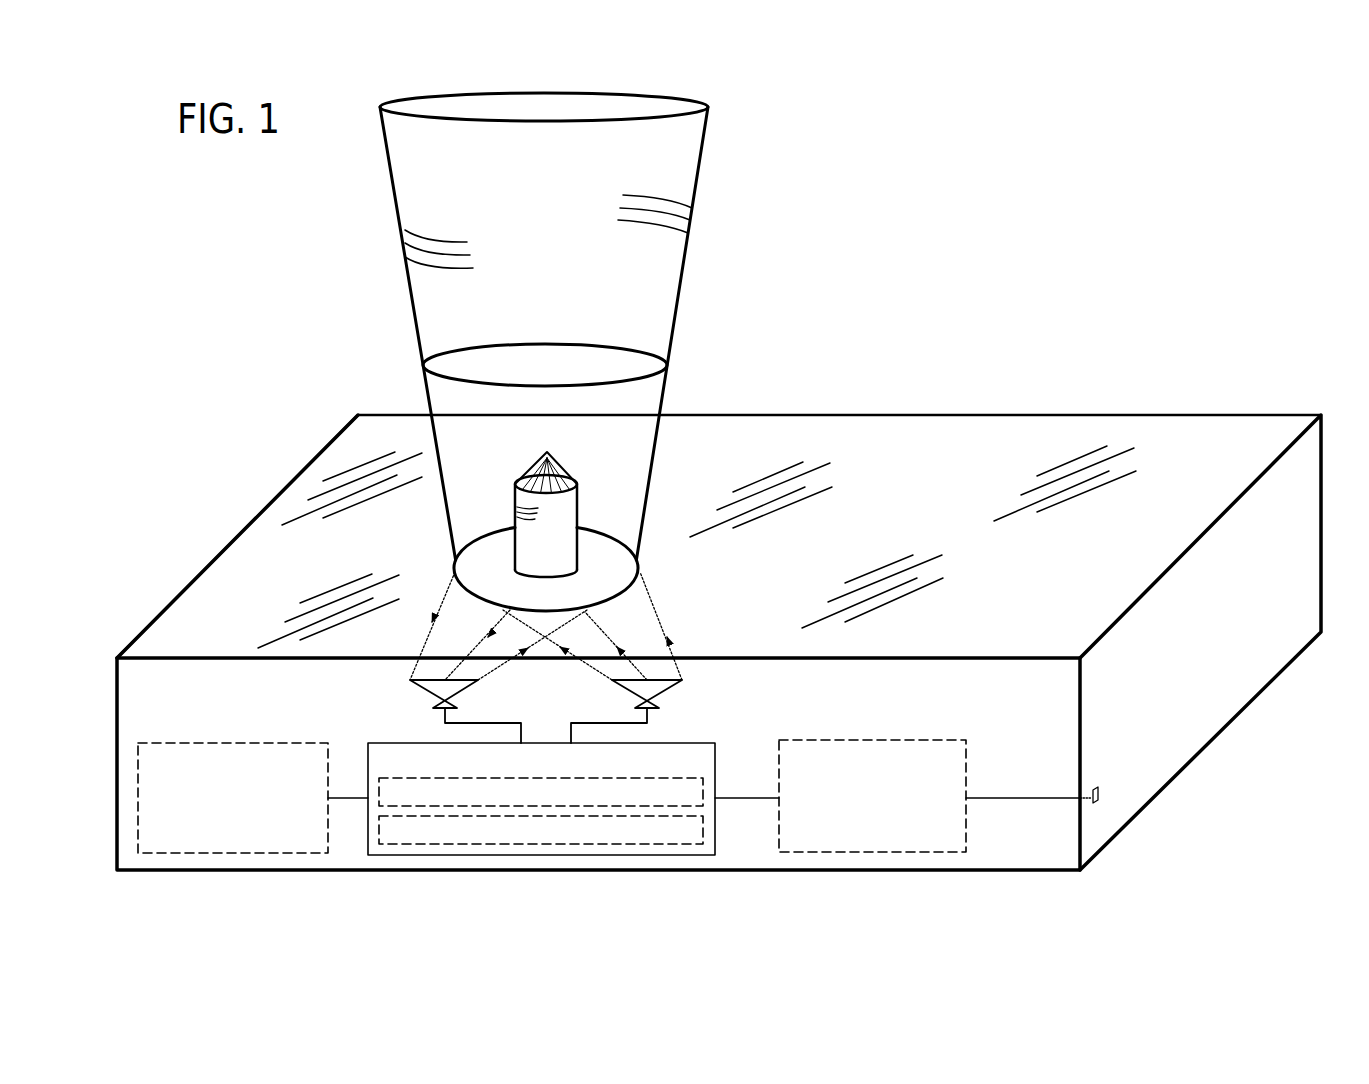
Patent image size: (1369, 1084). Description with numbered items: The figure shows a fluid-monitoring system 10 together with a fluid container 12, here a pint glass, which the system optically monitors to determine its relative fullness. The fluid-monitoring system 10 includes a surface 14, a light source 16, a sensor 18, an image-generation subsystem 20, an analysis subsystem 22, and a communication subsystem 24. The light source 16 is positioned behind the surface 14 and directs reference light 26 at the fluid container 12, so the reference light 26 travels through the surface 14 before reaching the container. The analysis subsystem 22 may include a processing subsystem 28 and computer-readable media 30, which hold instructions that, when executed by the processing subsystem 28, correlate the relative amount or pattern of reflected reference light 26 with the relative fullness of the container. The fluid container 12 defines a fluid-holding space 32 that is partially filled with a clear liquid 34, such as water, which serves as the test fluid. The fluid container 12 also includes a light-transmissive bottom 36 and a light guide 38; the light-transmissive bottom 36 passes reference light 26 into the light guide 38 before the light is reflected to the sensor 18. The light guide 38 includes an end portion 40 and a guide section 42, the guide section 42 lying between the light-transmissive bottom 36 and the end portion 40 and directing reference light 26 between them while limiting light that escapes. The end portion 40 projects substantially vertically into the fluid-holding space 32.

The fluid-monitoring system 10 is at (245, 345).
The fluid container 12 is at (368, 205).
The surface 14 is at (897, 560).
The light source 16 is at (669, 698).
The sensor 18 is at (427, 698).
The image-generation subsystem 20 is at (175, 740).
The analysis subsystem 22 is at (565, 785).
The communication subsystem 24 is at (968, 759).
The reference light 26 is at (676, 619).
The processing subsystem 28 is at (705, 795).
The computer-readable media 30 is at (705, 835).
The fluid-holding space 32 is at (657, 278).
The liquid 34 is at (552, 363).
The light-transmissive bottom 36 is at (582, 566).
The light guide 38 is at (551, 503).
The end portion 40 is at (557, 465).
The guide section 42 is at (542, 548).